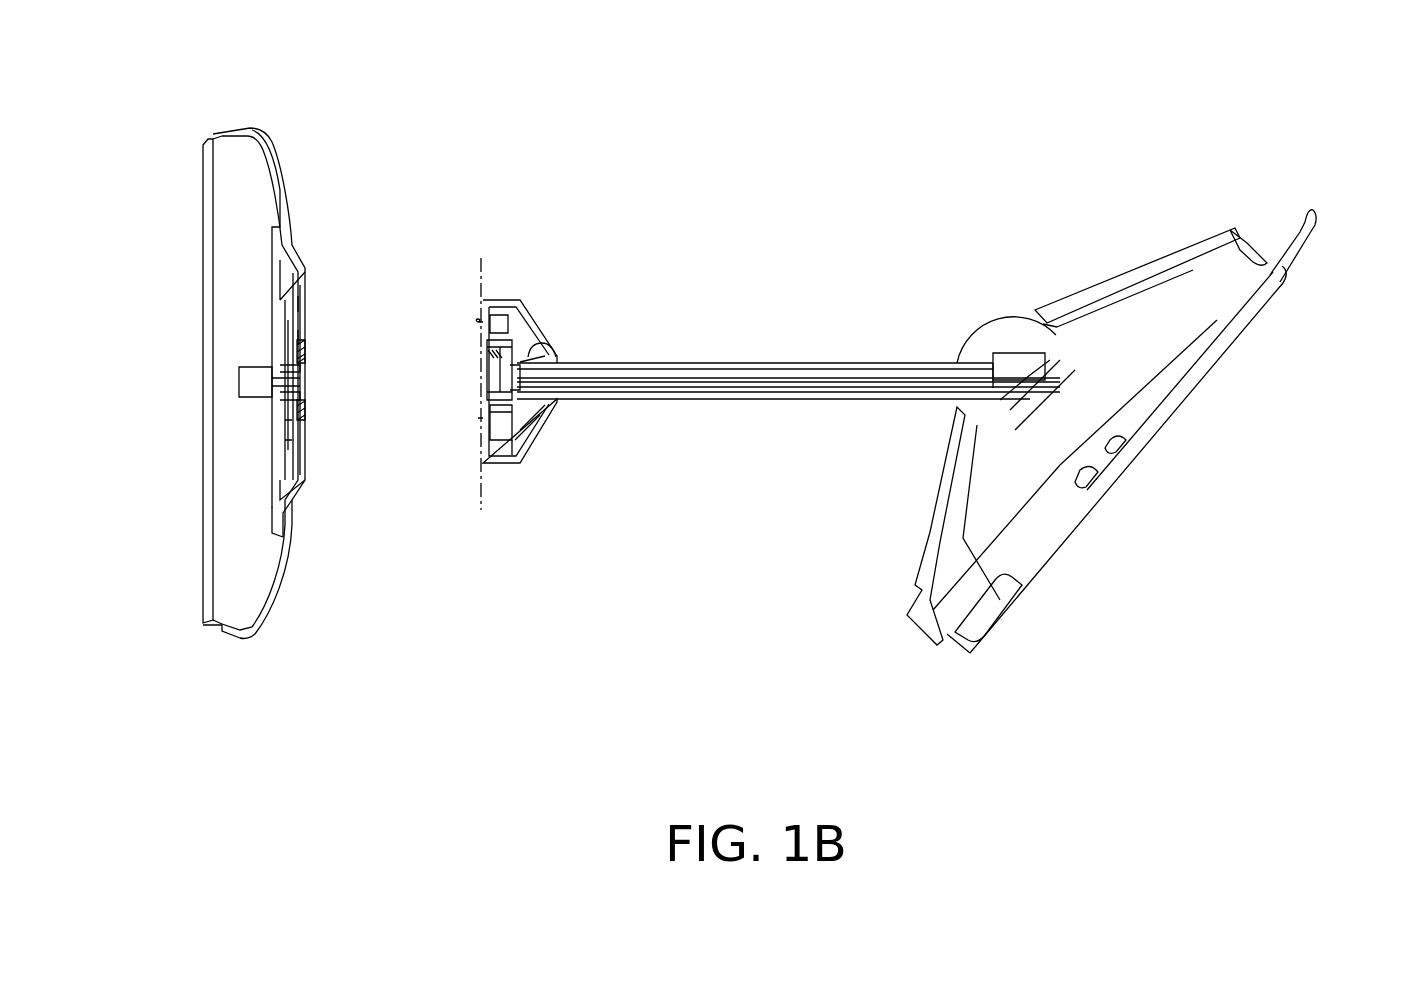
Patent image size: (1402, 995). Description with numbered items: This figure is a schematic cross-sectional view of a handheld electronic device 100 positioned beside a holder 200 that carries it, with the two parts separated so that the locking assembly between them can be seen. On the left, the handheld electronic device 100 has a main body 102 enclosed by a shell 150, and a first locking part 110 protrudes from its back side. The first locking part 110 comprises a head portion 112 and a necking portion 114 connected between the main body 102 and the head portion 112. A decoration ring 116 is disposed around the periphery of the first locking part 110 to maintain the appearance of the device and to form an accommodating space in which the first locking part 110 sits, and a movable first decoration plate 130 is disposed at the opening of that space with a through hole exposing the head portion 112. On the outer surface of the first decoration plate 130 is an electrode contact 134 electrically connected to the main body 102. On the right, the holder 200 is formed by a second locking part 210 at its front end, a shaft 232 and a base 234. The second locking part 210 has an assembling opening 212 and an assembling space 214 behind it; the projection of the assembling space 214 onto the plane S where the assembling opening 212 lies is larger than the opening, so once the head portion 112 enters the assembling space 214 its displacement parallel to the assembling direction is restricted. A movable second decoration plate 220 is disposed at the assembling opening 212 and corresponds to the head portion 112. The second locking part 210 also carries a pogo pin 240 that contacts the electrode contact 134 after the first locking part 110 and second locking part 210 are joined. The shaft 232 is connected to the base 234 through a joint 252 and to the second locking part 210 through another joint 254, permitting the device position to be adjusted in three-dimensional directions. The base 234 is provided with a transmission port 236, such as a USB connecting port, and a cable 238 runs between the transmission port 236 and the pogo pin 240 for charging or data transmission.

The handheld electronic device 100 is at (232, 655).
The main body 102 is at (228, 148).
The shell 150 is at (268, 142).
The electrode contact 134 is at (308, 298).
The head portion 112 is at (304, 400).
The necking portion 114 is at (305, 425).
The first locking part 110 is at (370, 424).
The first decoration plate 130 is at (303, 476).
The decoration ring 116 is at (290, 503).
The plane S is at (480, 272).
The holder 200 is at (759, 548).
The second locking part 210 is at (497, 294).
The pogo pin 240 is at (478, 321).
The second decoration plate 220 is at (482, 383).
The assembling opening 212 is at (481, 417).
The assembling space 214 is at (532, 446).
The joint 254 is at (548, 353).
The shaft 232 is at (810, 362).
The cable 238 is at (697, 378).
The joint 252 is at (997, 340).
The base 234 is at (1127, 290).
The transmission port 236 is at (1258, 250).